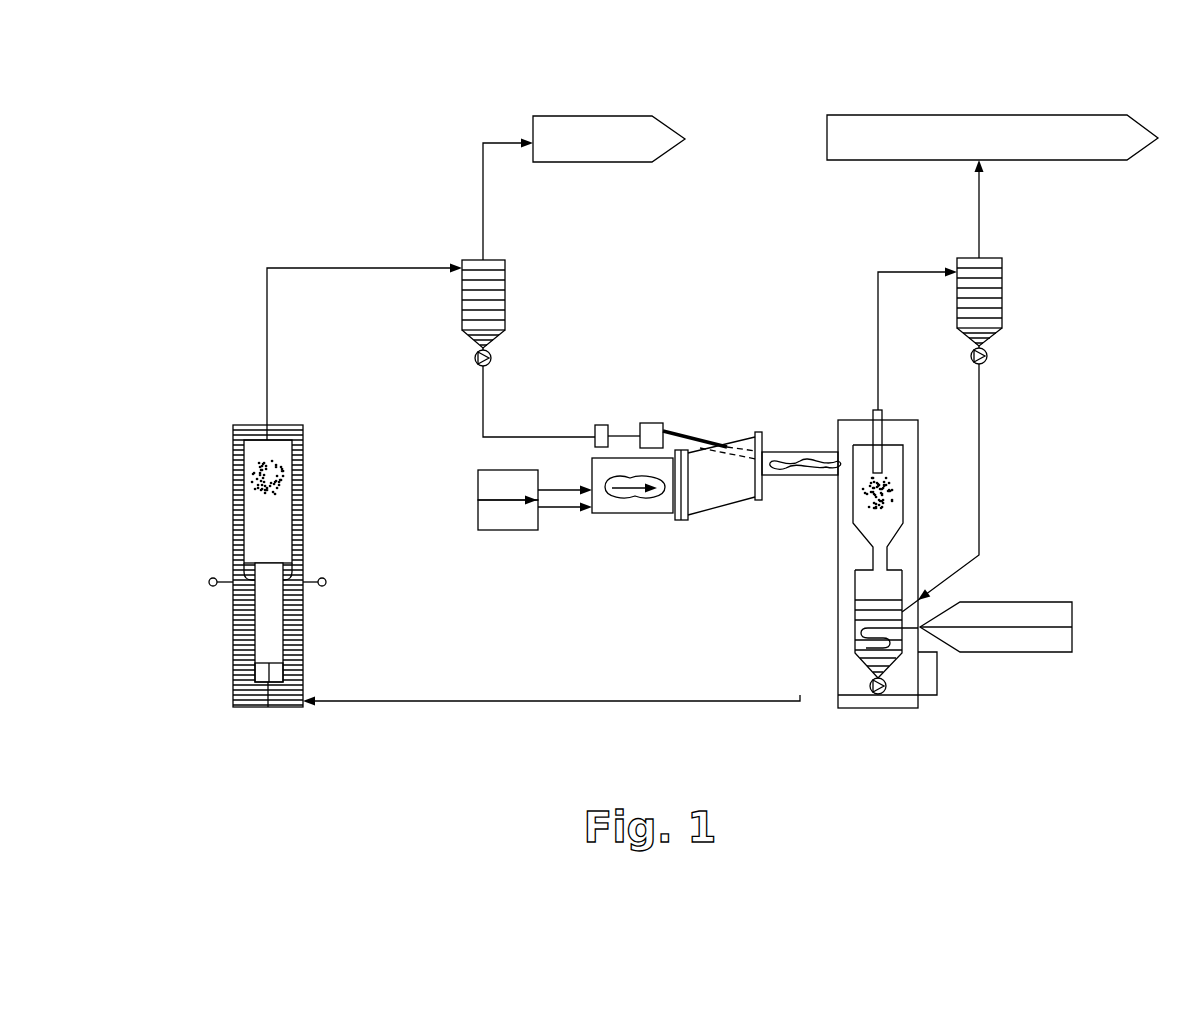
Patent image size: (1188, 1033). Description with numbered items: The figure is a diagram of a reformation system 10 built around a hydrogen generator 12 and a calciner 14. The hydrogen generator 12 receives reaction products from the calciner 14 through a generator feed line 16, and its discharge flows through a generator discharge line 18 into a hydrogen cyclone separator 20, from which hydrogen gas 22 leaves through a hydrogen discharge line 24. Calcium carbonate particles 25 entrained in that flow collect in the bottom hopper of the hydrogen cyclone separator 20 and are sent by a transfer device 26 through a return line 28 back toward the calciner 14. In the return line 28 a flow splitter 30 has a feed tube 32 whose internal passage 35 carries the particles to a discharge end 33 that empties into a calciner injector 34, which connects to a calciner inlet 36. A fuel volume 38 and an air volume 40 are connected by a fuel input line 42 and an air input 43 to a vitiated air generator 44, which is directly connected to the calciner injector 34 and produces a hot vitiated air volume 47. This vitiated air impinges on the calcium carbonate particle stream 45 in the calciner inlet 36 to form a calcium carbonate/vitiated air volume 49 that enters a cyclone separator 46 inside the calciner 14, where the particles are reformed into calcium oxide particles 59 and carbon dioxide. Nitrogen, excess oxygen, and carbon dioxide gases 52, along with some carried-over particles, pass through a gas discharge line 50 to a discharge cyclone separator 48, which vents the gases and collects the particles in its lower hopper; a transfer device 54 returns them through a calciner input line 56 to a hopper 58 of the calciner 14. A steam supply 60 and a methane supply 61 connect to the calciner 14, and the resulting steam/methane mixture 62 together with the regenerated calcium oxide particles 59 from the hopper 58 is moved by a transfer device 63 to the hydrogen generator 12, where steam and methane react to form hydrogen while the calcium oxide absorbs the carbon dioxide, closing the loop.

The reformation system 10 is at (311, 163).
The hydrogen generator 12 is at (303, 527).
The calciner 14 is at (838, 665).
The generator feed line 16 is at (538, 700).
The generator discharge line 18 is at (343, 268).
The hydrogen cyclone separator 20 is at (505, 276).
The hydrogen gas 22 is at (603, 113).
The hydrogen discharge line 24 is at (483, 228).
The calcium carbonate particles 25 is at (255, 474).
The transfer device 26 is at (494, 352).
The return line 28 is at (483, 420).
The flow splitter 30 is at (620, 433).
The feed tube 32 is at (678, 440).
The discharge end 33 is at (758, 430).
The calciner injector 34 is at (724, 490).
The internal passage 35 is at (700, 433).
The calciner inlet 36 is at (782, 452).
The fuel volume 38 is at (478, 487).
The air volume 40 is at (490, 532).
The fuel input line 42 is at (567, 487).
The air input 43 is at (570, 510).
The vitiated air generator 44 is at (640, 514).
The particle stream 45 is at (712, 444).
The cyclone separator 46 is at (857, 498).
The vitiated air volume 47 is at (614, 497).
The discharge cyclone separator 48 is at (1003, 291).
The calcium carbonate/vitiated air volume 49 is at (812, 462).
The gas discharge line 50 is at (897, 272).
The nitrogen, excess oxygen, and carbon dioxide gases 52 is at (976, 113).
The transfer device 54 is at (990, 354).
The calciner input line 56 is at (984, 495).
The hopper 58 is at (855, 618).
The calcium oxide particles 59 is at (880, 604).
The steam supply 60 is at (1007, 602).
The methane supply 61 is at (1048, 652).
The steam/methane mixture 62 is at (920, 628).
The transfer device 63 is at (888, 690).